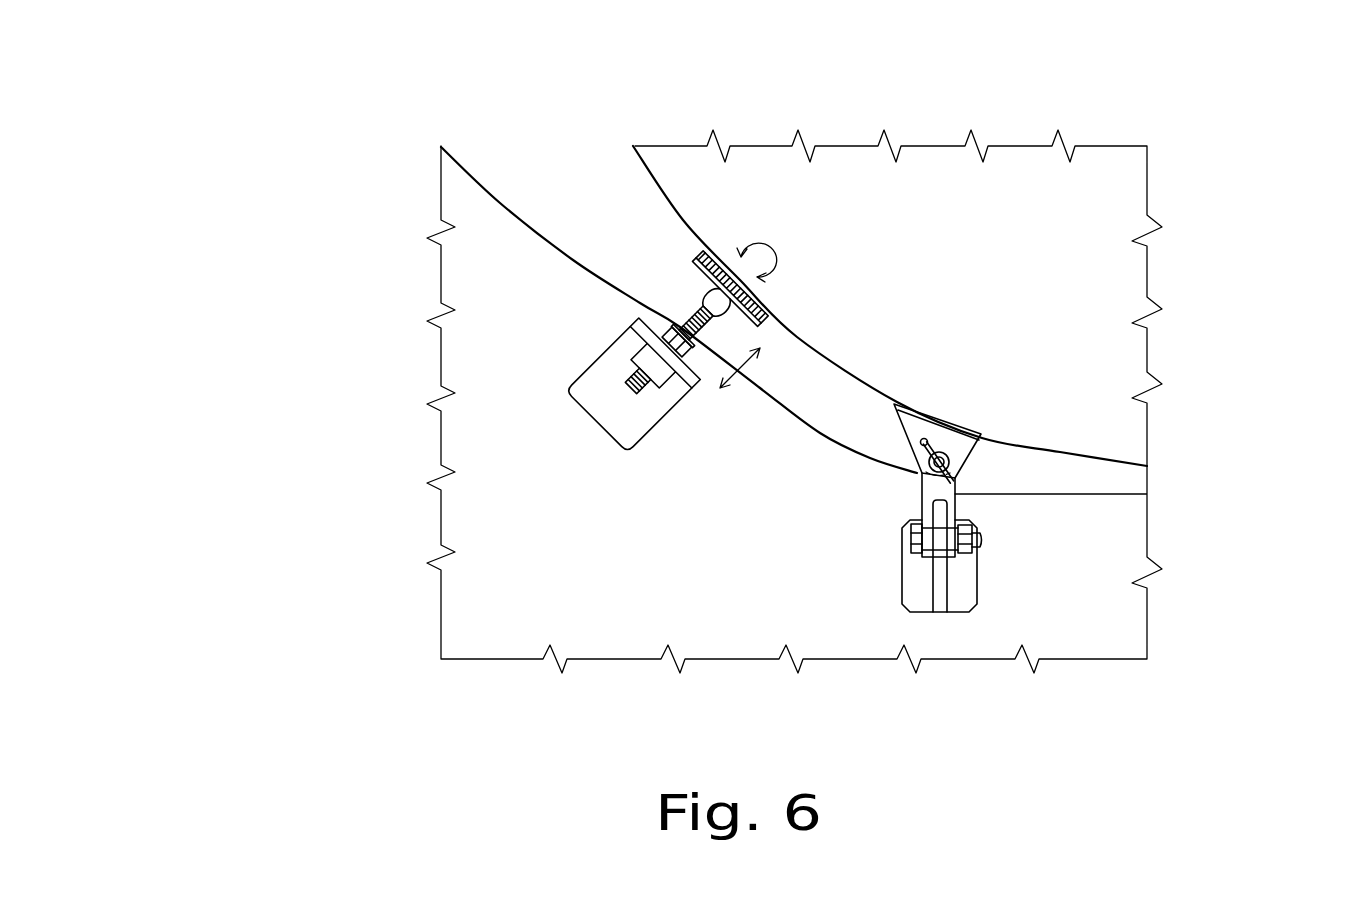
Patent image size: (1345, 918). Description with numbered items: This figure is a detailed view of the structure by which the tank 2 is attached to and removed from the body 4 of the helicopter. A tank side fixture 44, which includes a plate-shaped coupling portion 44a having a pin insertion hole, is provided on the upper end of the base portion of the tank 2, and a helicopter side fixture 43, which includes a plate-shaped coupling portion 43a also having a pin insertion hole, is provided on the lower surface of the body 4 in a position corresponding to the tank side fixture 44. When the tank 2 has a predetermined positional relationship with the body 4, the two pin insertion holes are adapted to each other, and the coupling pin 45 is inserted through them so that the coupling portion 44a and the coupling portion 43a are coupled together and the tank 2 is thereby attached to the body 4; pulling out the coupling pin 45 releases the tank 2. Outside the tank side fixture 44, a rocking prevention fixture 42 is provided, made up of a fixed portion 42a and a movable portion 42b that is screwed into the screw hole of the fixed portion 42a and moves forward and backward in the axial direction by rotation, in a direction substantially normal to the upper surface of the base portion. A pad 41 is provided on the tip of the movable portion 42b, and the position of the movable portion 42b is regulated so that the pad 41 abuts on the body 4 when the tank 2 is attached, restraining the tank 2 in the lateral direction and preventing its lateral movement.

The tank 2 is at (497, 198).
The body 4 is at (658, 185).
The pad 41 is at (714, 257).
The rocking prevention fixture 42 is at (675, 291).
The fixed portion 42a is at (598, 357).
The movable portion 42b is at (680, 316).
The helicopter side fixture 43 is at (965, 431).
The coupling portion 43a is at (963, 452).
The tank side fixture 44 is at (963, 588).
The coupling portion 44a is at (952, 497).
The coupling pin 45 is at (955, 468).